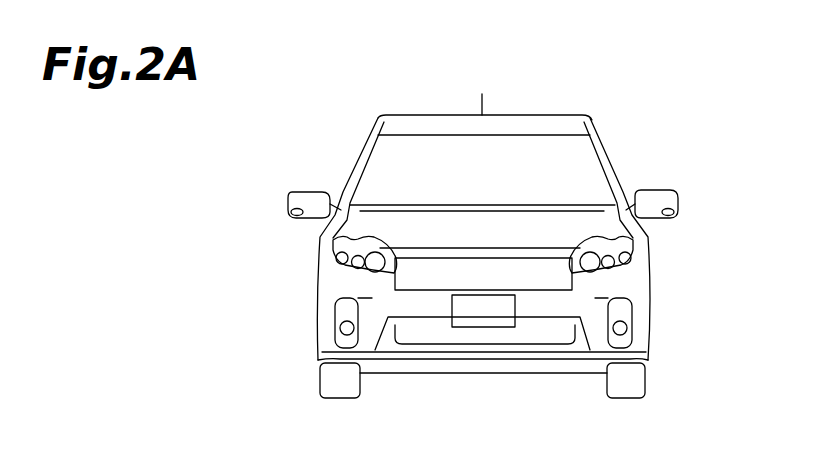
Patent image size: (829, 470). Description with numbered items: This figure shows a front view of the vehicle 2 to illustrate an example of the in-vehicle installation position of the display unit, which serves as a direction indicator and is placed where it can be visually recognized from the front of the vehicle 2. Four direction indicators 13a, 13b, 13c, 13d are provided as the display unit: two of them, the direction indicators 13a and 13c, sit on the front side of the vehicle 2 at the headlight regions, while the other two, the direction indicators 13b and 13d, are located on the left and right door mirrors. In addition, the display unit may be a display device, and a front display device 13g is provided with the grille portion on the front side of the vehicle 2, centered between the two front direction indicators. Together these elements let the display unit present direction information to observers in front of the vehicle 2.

The vehicle 2 is at (485, 272).
The direction indicator 13a is at (330, 255).
The direction indicator 13b is at (288, 215).
The direction indicator 13c is at (637, 252).
The direction indicator 13d is at (673, 215).
The front display device 13g is at (542, 290).